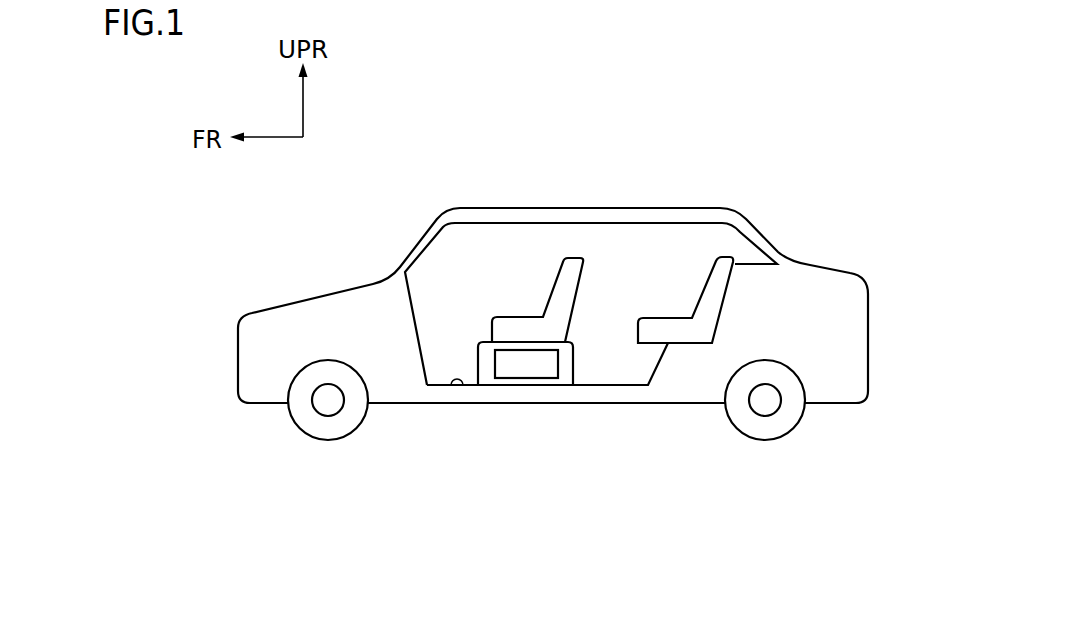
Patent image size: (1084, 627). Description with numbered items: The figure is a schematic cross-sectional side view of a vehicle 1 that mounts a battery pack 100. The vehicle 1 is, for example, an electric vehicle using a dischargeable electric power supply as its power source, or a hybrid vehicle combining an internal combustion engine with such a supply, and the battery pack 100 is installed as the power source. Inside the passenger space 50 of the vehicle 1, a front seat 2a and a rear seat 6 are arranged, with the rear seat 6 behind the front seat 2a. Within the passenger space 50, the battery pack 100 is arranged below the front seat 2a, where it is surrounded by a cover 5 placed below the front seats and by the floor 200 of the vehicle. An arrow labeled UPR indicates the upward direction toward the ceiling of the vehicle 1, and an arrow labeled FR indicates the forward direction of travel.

The vehicle 1 is at (318, 219).
The front seat 2a is at (523, 332).
The passenger space 50 is at (625, 253).
The rear seat 6 is at (662, 332).
The cover 5 is at (573, 370).
The battery pack 100 is at (527, 365).
The floor 200 is at (451, 385).